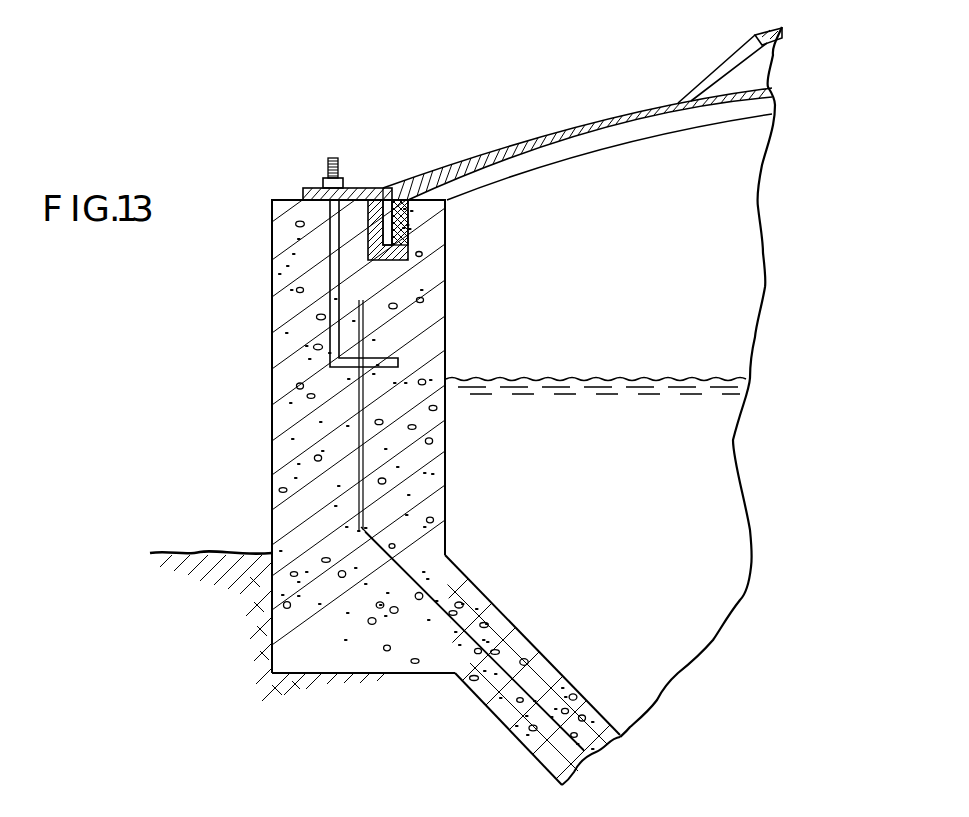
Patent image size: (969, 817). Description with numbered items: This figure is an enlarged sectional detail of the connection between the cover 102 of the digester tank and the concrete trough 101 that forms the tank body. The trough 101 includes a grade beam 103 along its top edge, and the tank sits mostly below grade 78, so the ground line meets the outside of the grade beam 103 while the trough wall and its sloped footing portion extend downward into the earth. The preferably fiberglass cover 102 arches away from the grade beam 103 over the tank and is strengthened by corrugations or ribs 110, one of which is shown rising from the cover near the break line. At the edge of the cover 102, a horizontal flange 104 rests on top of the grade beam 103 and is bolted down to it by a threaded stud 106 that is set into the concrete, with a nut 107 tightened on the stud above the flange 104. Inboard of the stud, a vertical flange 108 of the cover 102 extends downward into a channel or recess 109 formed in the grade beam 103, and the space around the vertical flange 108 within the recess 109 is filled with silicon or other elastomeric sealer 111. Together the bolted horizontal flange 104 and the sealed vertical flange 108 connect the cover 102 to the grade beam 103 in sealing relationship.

The grade 78 is at (200, 553).
The concrete trough 101 is at (456, 706).
The cover 102 is at (601, 109).
The grade beam 103 is at (272, 323).
The horizontal flange 104 is at (365, 188).
The threaded stud 106 is at (330, 247).
The nut 107 is at (323, 180).
The vertical flange 108 is at (385, 246).
The channel or recess 109 is at (375, 253).
The corrugations or ribs 110 is at (782, 27).
The elastomeric sealer 111 is at (403, 220).